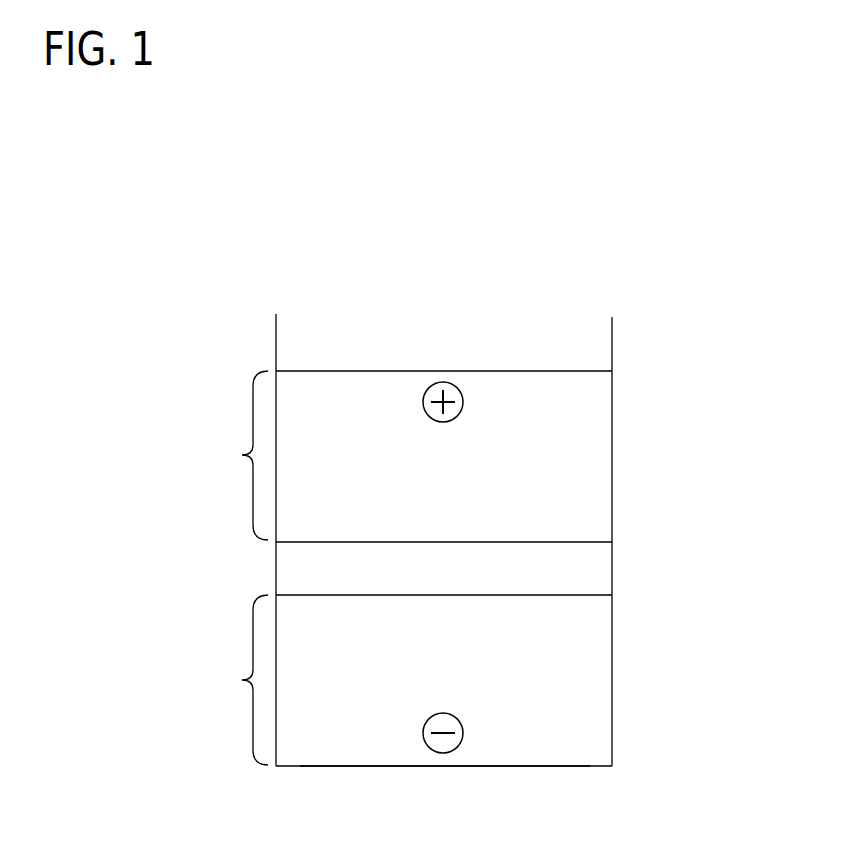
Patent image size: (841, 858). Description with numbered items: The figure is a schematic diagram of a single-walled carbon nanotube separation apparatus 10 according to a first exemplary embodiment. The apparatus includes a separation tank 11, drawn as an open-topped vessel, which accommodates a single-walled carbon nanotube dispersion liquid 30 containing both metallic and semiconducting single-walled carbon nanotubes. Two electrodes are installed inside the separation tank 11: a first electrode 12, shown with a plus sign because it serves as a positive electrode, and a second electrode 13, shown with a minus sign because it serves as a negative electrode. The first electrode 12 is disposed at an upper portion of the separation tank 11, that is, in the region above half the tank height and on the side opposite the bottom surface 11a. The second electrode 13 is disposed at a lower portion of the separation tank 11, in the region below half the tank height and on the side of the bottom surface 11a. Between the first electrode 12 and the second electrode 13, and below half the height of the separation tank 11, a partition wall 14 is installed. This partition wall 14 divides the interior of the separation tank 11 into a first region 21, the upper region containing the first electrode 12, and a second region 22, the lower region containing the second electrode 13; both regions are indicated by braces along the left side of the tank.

The single-walled carbon nanotube separation apparatus 10 is at (645, 232).
The separation tank 11 is at (612, 341).
The bottom surface 11a is at (390, 764).
The first electrode 12 is at (463, 402).
The second electrode 13 is at (463, 733).
The partition wall 14 is at (612, 567).
The first region 21 is at (238, 455).
The second region 22 is at (238, 680).
The single-walled carbon nanotube dispersion liquid 30 is at (572, 470).